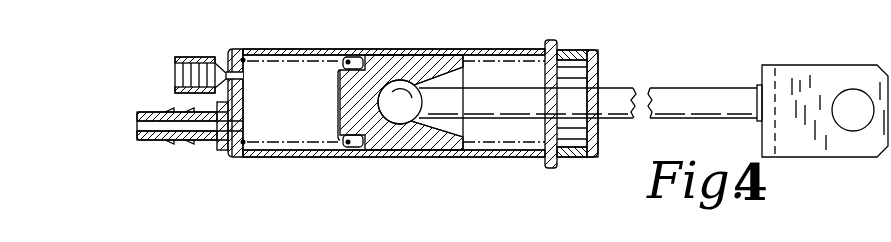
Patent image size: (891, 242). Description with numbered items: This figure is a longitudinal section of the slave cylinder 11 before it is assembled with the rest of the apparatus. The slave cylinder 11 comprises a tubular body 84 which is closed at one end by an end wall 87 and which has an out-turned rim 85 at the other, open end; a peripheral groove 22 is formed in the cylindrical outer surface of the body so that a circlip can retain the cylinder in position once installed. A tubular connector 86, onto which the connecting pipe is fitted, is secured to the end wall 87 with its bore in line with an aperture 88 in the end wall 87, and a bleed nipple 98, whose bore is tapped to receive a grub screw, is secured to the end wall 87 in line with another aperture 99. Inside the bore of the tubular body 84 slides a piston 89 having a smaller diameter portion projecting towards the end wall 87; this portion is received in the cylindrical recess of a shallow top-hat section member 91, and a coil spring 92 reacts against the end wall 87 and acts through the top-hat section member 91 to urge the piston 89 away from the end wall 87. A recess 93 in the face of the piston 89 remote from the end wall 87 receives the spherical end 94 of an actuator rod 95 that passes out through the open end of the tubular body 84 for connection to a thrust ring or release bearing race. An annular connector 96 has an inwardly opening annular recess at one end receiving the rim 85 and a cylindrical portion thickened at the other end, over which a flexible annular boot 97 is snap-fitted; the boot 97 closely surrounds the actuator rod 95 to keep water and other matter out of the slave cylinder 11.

The tubular body 84 is at (507, 157).
The peripheral groove 22 is at (523, 160).
The aperture 99 is at (245, 60).
The end wall 87 is at (233, 100).
The bleed nipple 98 is at (222, 62).
The tubular connector 86 is at (190, 141).
The aperture 88 is at (235, 129).
The top-hat section member 91 is at (338, 103).
The coil spring 92 is at (318, 62).
The slave cylinder 11 is at (357, 148).
The piston 89 is at (408, 143).
The spherical end 94 is at (403, 97).
The recess 93 is at (443, 67).
The actuator rod 95 is at (497, 100).
The annular connector 96 is at (553, 40).
The flexible annular boot 97 is at (595, 67).
The out-turned rim 85 is at (550, 163).